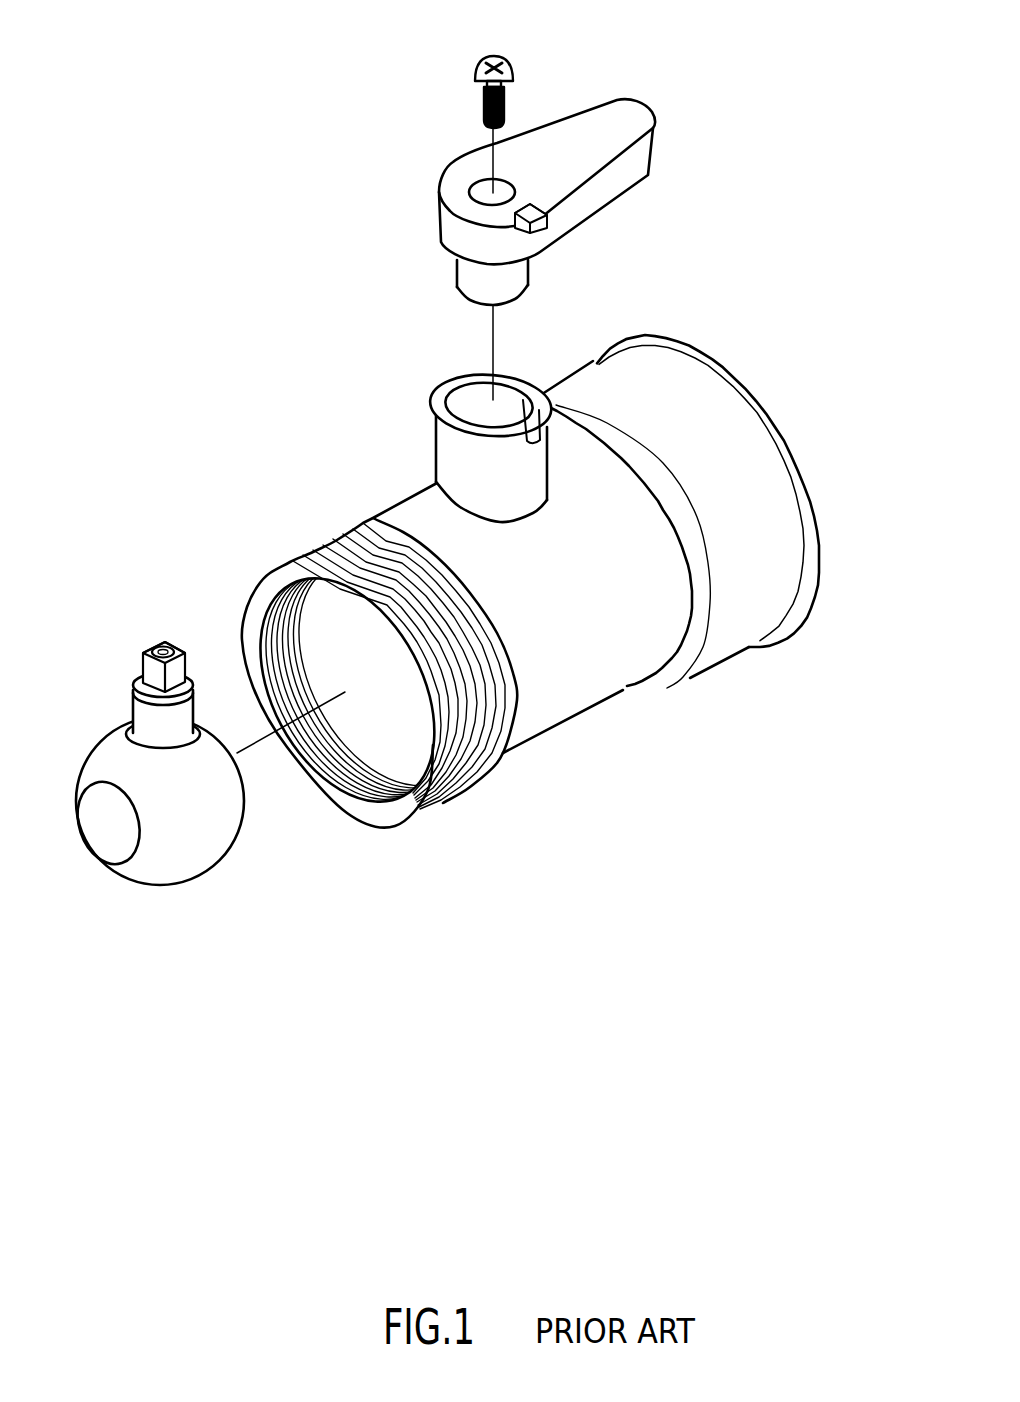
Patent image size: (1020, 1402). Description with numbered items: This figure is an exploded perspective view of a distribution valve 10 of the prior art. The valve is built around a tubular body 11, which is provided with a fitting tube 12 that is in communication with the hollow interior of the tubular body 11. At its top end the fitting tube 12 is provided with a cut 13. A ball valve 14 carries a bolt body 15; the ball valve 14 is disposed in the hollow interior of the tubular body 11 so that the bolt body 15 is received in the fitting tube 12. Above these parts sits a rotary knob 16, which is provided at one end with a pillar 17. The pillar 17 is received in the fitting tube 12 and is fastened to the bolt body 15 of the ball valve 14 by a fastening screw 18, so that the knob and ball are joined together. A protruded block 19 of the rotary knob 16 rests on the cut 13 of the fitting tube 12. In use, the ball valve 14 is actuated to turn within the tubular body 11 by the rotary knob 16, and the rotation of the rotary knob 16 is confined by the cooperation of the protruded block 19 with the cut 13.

The distribution valve 10 is at (633, 277).
The tubular body 11 is at (597, 682).
The fitting tube 12 is at (453, 457).
The cut 13 is at (534, 410).
The ball valve 14 is at (195, 863).
The bolt body 15 is at (142, 665).
The rotary knob 16 is at (611, 107).
The pillar 17 is at (462, 273).
The fastening screw 18 is at (511, 57).
The protruded block 19 is at (540, 228).